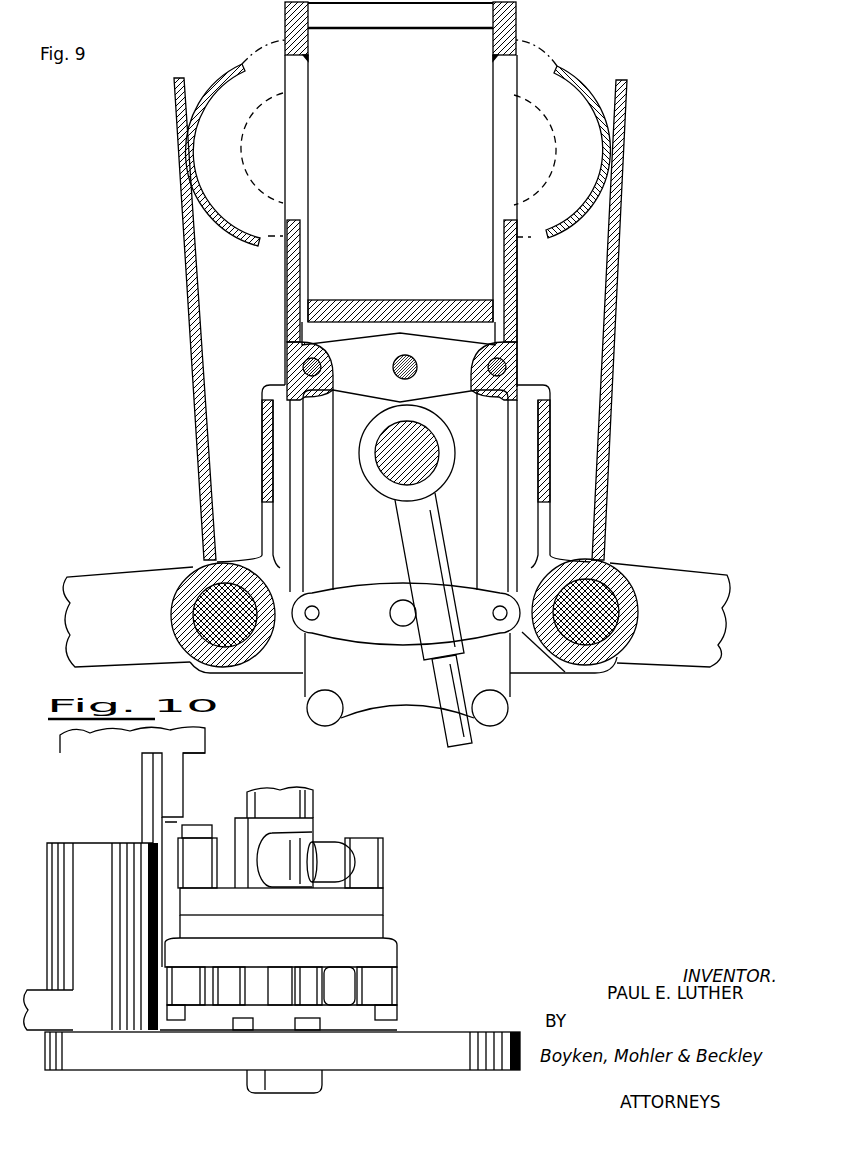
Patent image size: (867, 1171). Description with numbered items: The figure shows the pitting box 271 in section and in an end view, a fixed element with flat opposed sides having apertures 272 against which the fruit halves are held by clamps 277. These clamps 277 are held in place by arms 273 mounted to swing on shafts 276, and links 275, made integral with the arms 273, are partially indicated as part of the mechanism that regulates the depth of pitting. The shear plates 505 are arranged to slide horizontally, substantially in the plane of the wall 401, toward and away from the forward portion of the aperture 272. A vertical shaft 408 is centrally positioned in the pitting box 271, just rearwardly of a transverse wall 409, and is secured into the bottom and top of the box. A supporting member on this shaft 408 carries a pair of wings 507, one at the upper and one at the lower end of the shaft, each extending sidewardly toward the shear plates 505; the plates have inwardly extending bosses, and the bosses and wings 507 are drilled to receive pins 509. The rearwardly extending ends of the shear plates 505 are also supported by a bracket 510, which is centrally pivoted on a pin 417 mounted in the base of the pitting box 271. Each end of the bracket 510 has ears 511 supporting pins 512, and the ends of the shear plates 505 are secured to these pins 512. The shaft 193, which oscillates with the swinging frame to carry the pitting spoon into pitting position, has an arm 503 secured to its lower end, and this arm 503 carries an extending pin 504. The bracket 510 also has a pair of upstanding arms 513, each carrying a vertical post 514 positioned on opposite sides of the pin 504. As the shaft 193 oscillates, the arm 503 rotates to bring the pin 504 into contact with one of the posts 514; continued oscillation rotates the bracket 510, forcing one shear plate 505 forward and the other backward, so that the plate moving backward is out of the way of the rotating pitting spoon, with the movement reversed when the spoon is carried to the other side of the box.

In FIG. 9, the pitting box 271 is at (286, 19).
In FIG. 10, the pitting box 271 is at (407, 1074).
In FIG. 9, the wall 401 is at (292, 40).
In FIG. 9, the apertures 272 is at (306, 60).
In FIG. 9, the clamps 277 is at (244, 236).
In FIG. 9, the transverse wall 409 is at (410, 299).
In FIG. 9, the shear plates 505 is at (290, 285).
In FIG. 10, the shear plates 505 is at (375, 987).
In FIG. 9, the wings 507 is at (353, 360).
In FIG. 9, the pins 509 is at (303, 364).
In FIG. 9, the arms 273 is at (190, 326).
In FIG. 10, the arms 273 is at (88, 880).
In FIG. 9, the vertical shaft 408 is at (412, 378).
In FIG. 9, the shaft 193 is at (392, 470).
In FIG. 10, the shaft 193 is at (270, 803).
In FIG. 9, the arm 503 is at (420, 535).
In FIG. 10, the arm 503 is at (300, 841).
In FIG. 9, the pin 504 is at (467, 744).
In FIG. 10, the pin 504 is at (337, 862).
In FIG. 9, the shafts 276 is at (212, 574).
In FIG. 9, the links 275 is at (100, 617).
In FIG. 10, the links 275 is at (38, 1018).
In FIG. 9, the pin 417 is at (405, 620).
In FIG. 10, the pin 417 is at (312, 1088).
In FIG. 9, the ears 511 is at (470, 622).
In FIG. 10, the ears 511 is at (390, 958).
In FIG. 9, the pins 512 is at (543, 642).
In FIG. 10, the pins 512 is at (395, 1026).
In FIG. 9, the vertical posts 514 is at (317, 714).
In FIG. 10, the vertical posts 514 is at (365, 860).
In FIG. 9, the bracket 510 is at (374, 704).
In FIG. 10, the bracket 510 is at (384, 930).
In FIG. 10, the upstanding arms 513 is at (365, 905).